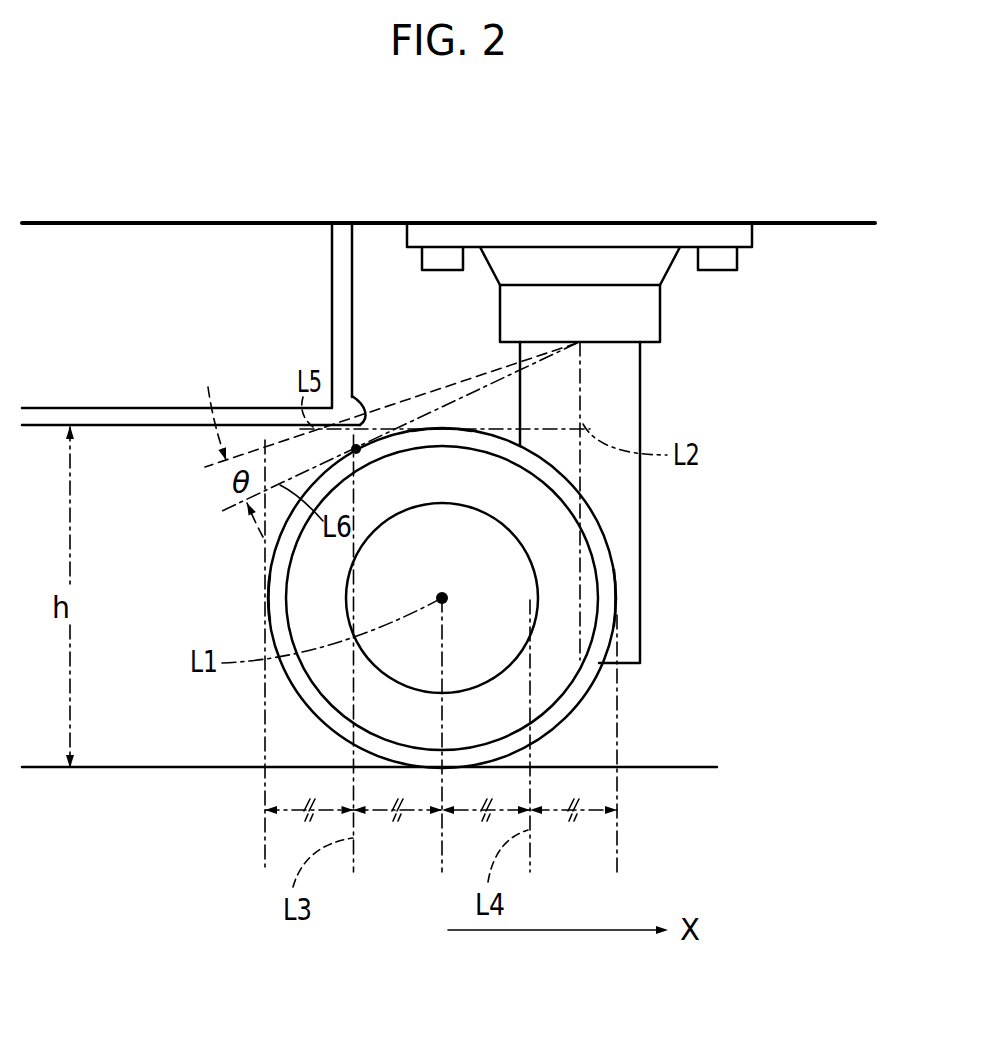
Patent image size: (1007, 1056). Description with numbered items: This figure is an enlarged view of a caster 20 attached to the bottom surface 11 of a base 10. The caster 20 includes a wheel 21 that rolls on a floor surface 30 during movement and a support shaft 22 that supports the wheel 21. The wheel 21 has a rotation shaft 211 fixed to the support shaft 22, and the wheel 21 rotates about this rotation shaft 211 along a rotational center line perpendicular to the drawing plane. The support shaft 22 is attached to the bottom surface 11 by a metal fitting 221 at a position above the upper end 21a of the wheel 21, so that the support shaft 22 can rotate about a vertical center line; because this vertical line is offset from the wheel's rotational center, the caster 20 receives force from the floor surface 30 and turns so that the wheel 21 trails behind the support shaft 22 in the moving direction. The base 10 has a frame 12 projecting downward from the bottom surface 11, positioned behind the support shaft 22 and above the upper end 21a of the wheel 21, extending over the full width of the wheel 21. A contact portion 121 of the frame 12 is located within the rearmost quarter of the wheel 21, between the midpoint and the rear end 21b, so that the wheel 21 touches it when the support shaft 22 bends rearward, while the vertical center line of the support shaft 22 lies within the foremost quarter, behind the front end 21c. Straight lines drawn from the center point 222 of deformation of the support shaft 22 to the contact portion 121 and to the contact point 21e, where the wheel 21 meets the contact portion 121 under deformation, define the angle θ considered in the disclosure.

The base 10 is at (485, 176).
The bottom surface 11 is at (778, 224).
The frame 12 is at (176, 422).
The contact portion 121 is at (352, 396).
The caster 20 is at (720, 493).
The wheel 21 is at (303, 702).
The upper end 21a is at (440, 427).
The rear end 21b is at (266, 596).
The front end 21c is at (617, 585).
The contact point 21e is at (358, 450).
The rotation shaft 211 is at (360, 597).
The support shaft 22 is at (636, 408).
The metal fitting 221 is at (680, 292).
The center point of deformation 222 is at (577, 341).
The floor surface 30 is at (665, 767).